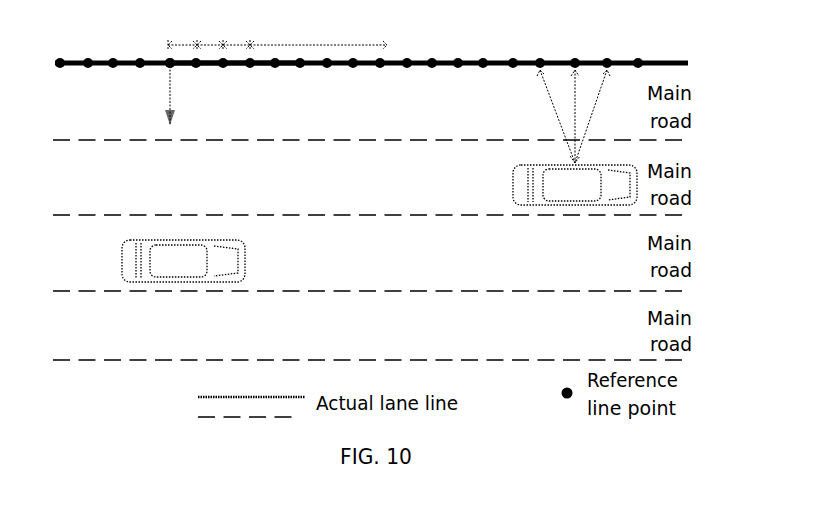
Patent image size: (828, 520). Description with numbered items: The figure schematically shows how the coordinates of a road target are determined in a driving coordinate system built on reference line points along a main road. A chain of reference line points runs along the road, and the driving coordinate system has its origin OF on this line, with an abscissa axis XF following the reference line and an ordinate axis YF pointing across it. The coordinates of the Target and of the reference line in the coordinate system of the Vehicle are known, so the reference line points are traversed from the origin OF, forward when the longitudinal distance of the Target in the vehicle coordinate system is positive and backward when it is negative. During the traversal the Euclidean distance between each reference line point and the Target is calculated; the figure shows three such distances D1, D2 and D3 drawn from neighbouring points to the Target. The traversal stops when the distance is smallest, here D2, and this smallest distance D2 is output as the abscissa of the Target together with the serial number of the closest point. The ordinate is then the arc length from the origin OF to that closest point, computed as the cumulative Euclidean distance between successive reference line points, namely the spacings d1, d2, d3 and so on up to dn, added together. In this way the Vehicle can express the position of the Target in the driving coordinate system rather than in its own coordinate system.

The reference line point spacing d1 is at (182, 38).
The reference line point spacing d2 is at (210, 38).
The reference line point spacing d3 is at (236, 38).
The reference line point spacing dn is at (318, 37).
The origin of the driving coordinate system OF is at (158, 54).
The abscissa axis of the driving coordinate system XF is at (235, 80).
The ordinate axis of the driving coordinate system YF is at (157, 95).
The Euclidean distance to road target D1 is at (551, 116).
The smallest Euclidean distance to road target D2 is at (566, 116).
The Euclidean distance to road target D3 is at (592, 116).
The road target Target is at (575, 185).
The vehicle Vehicle is at (183, 261).